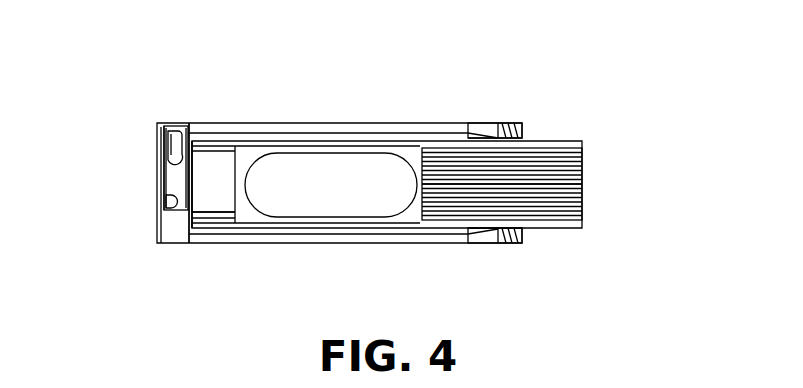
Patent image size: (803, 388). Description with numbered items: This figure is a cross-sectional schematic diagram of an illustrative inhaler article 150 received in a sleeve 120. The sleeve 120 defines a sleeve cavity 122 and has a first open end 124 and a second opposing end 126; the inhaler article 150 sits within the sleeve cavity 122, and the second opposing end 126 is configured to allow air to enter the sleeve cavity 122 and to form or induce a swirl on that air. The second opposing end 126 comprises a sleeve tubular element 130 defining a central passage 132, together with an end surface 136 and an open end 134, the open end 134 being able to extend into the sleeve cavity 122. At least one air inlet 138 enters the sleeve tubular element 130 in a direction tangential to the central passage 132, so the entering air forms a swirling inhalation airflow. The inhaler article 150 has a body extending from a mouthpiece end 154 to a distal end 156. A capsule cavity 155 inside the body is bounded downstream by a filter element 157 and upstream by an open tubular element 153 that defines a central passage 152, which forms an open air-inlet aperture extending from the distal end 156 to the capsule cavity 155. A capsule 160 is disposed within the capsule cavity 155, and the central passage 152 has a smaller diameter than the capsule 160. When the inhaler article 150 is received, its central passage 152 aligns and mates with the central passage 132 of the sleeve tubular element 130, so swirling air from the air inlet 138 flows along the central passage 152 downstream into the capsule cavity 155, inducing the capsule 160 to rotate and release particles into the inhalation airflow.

The sleeve 120 is at (386, 115).
The sleeve cavity 122 is at (468, 127).
The first open end 124 is at (523, 136).
The second opposing end 126 is at (163, 232).
The sleeve tubular element 130 is at (163, 181).
The central passage 132 is at (166, 200).
The open end 134 is at (190, 125).
The end surface 136 is at (168, 186).
The air inlet 138 is at (167, 132).
The inhaler article 150 is at (566, 132).
The central passage 152 is at (231, 193).
The open tubular element 153 is at (220, 214).
The mouthpiece end 154 is at (583, 212).
The capsule cavity 155 is at (251, 141).
The distal end 156 is at (193, 216).
The filter element 157 is at (572, 176).
The capsule 160 is at (312, 196).